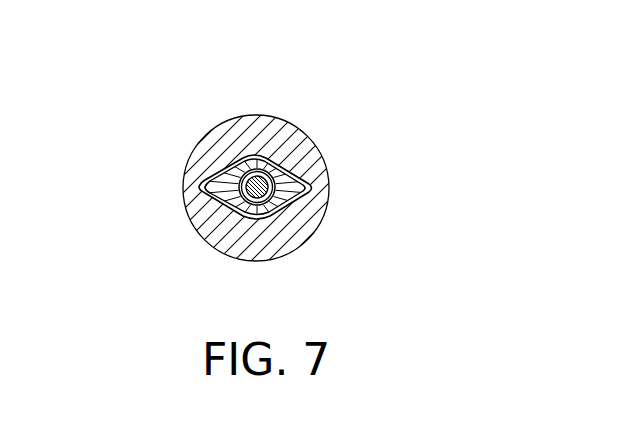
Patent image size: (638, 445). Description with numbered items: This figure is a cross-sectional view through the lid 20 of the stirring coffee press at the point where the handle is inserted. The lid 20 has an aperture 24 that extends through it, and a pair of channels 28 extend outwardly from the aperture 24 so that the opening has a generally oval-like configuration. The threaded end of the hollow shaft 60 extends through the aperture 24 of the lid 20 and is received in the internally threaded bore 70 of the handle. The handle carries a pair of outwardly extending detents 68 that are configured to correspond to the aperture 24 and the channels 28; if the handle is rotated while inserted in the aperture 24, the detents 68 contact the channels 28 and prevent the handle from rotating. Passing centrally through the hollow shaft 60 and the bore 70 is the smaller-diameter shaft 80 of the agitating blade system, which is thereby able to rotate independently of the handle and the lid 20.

The lid 20 is at (255, 217).
The aperture 24 is at (252, 158).
The channels 28 is at (187, 187).
The hollow shaft 60 is at (281, 181).
The detents 68 is at (206, 187).
The internally threaded bore 70 is at (264, 172).
The shaft 80 is at (313, 183).